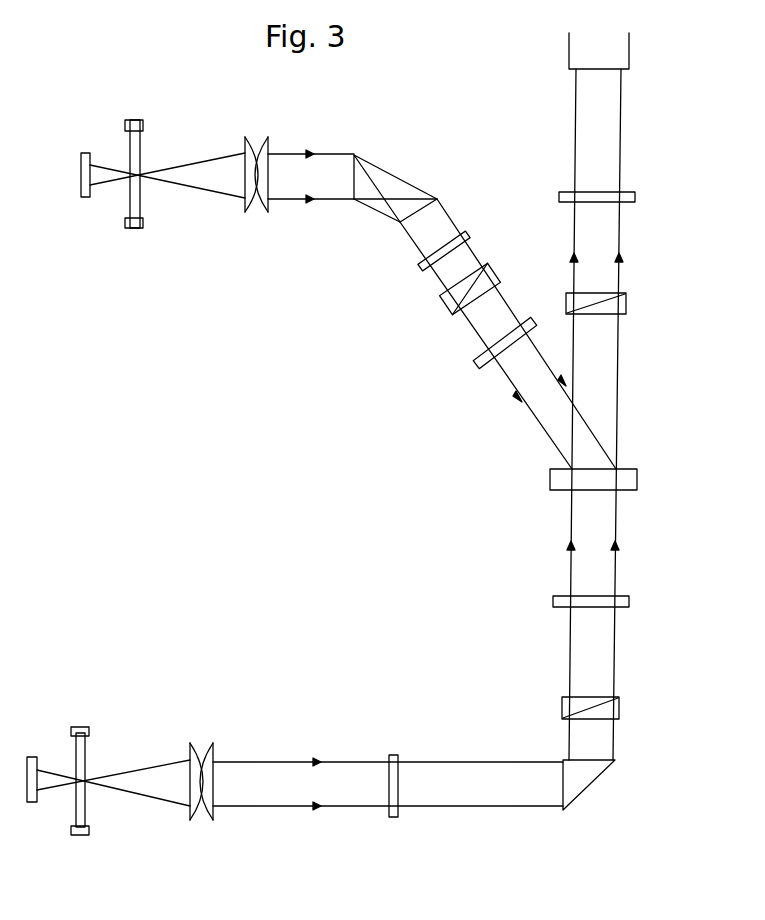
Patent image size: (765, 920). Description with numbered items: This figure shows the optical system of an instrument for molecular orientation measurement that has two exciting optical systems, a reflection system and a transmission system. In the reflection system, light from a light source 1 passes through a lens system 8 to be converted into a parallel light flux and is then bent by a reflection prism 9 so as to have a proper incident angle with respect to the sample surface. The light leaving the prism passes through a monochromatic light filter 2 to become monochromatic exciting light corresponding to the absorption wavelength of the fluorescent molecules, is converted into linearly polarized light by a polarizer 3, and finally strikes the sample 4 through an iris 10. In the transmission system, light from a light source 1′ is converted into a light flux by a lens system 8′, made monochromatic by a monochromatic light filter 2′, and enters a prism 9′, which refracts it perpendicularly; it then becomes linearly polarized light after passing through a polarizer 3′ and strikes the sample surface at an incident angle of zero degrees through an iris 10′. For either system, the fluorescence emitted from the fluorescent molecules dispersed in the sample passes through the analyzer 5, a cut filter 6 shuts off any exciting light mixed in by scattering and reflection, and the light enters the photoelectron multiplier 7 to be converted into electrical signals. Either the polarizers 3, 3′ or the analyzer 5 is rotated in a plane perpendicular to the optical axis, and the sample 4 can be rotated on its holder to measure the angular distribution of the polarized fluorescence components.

The light source 1 is at (133, 230).
The lens system 8 is at (255, 218).
The reflection prism 9 is at (382, 208).
The monochromatic light filter 2 is at (421, 270).
The polarizer 3 is at (447, 310).
The iris 10 is at (476, 371).
The sample 4 is at (628, 483).
The analyzer 5 is at (626, 305).
The cut filter 6 is at (635, 198).
The photoelectron multiplier 7 is at (622, 60).
The iris 10′ is at (629, 602).
The polarizer 3′ is at (619, 710).
The prism 9′ is at (583, 789).
The monochromatic light filter 2′ is at (392, 820).
The lens system 8′ is at (200, 825).
The light source 1′ is at (80, 837).